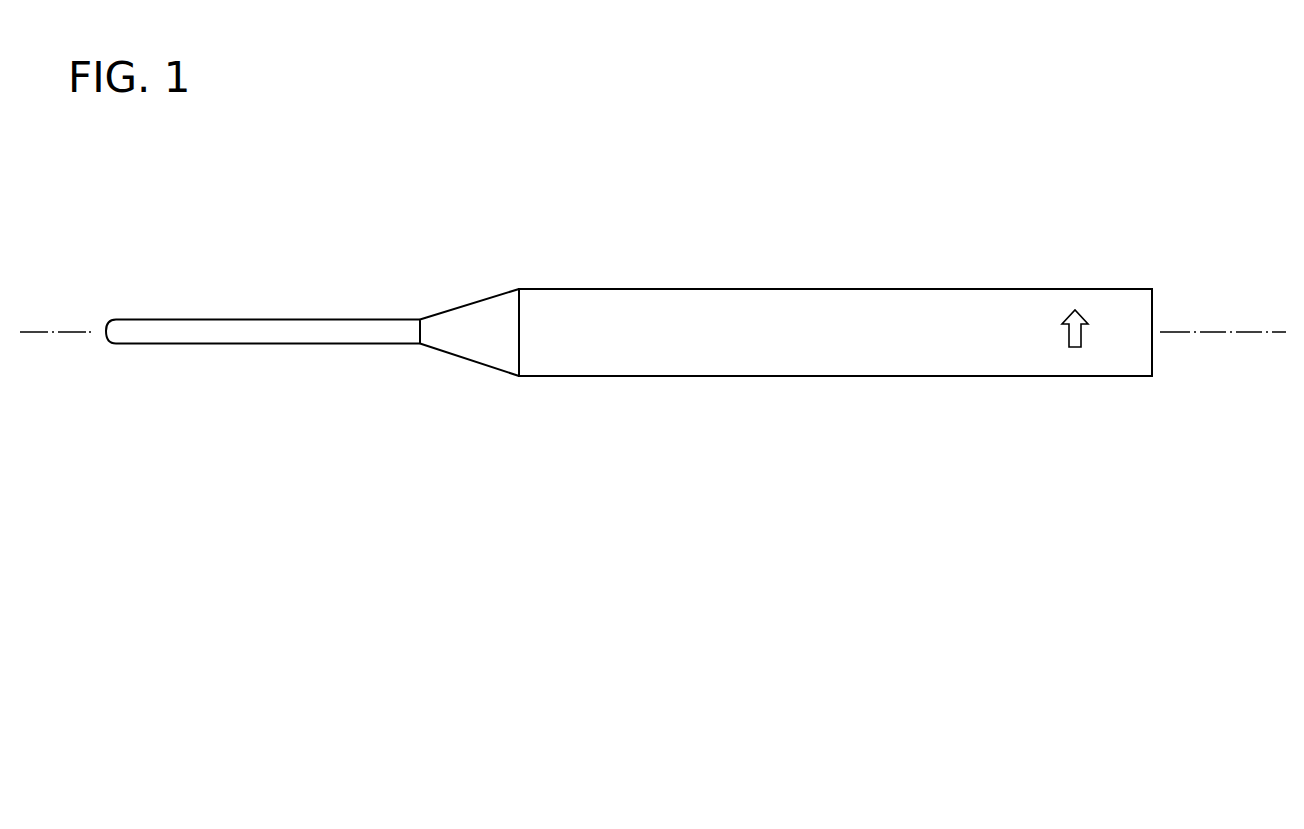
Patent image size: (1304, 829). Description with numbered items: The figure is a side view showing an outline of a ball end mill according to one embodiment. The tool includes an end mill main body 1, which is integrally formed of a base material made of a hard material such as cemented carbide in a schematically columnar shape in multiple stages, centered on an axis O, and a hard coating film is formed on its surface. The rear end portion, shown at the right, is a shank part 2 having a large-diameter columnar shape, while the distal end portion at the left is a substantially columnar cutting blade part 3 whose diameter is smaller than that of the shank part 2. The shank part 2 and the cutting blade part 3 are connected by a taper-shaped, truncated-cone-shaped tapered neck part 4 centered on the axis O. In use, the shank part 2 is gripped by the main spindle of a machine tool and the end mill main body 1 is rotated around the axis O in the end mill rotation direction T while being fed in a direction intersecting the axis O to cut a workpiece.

The end mill main body 1 is at (562, 145).
The shank part 2 is at (585, 265).
The cutting blade part 3 is at (365, 270).
The tapered neck part 4 is at (461, 270).
The end mill rotation direction T is at (1088, 328).
The axis O is at (1238, 334).